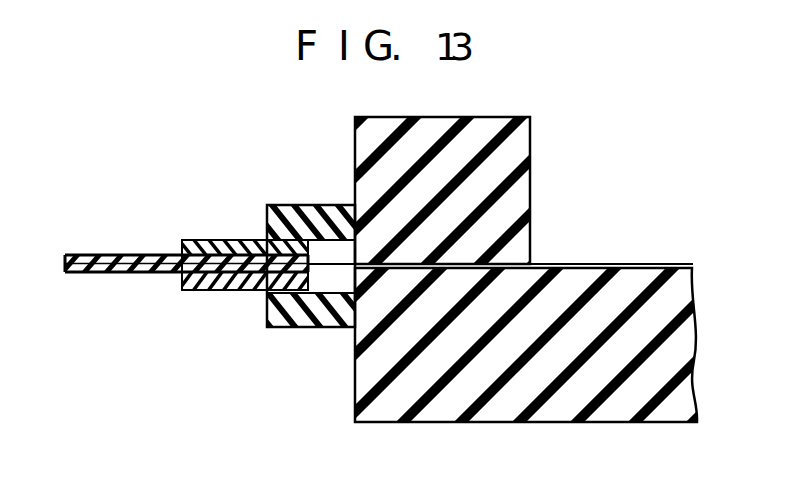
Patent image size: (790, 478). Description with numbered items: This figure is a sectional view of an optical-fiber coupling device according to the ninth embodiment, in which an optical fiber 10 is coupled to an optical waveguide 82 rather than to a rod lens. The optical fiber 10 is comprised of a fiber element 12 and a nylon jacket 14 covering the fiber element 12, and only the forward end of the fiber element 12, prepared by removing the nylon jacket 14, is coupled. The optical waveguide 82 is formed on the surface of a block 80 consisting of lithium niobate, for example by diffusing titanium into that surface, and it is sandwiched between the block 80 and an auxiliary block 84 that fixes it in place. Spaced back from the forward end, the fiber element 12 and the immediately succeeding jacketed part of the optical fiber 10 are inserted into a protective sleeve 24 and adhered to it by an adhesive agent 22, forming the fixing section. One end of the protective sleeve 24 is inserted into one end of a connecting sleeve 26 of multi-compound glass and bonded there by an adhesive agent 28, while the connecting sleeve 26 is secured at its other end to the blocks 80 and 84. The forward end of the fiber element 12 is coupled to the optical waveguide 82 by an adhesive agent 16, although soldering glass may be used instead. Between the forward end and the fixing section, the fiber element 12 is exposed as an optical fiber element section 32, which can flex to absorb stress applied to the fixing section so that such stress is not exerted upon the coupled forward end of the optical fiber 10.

The optical fiber 10 is at (191, 253).
The fiber element 12 is at (121, 255).
The nylon jacket 14 is at (96, 255).
The adhesive agent 16 is at (347, 266).
The adhesive agent 22 is at (245, 251).
The protective sleeve 24 is at (198, 244).
The connecting sleeve 26 is at (288, 328).
The adhesive agent 28 is at (268, 293).
The optical fiber element section 32 is at (322, 266).
The block 80 is at (567, 423).
The optical waveguide 82 is at (634, 263).
The auxiliary block 84 is at (530, 165).